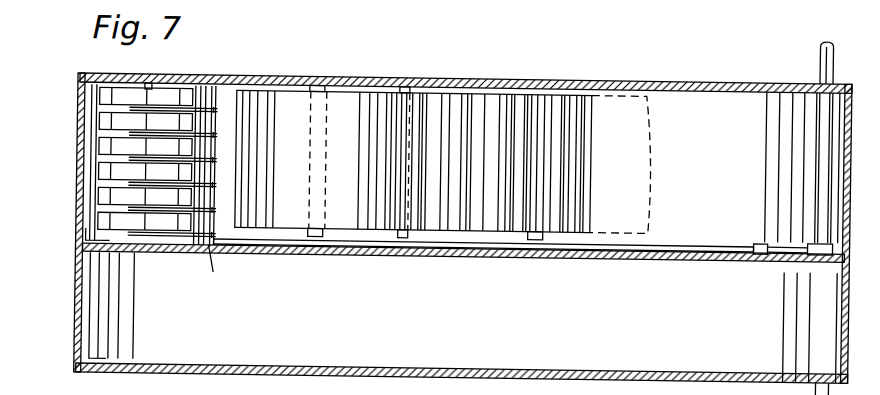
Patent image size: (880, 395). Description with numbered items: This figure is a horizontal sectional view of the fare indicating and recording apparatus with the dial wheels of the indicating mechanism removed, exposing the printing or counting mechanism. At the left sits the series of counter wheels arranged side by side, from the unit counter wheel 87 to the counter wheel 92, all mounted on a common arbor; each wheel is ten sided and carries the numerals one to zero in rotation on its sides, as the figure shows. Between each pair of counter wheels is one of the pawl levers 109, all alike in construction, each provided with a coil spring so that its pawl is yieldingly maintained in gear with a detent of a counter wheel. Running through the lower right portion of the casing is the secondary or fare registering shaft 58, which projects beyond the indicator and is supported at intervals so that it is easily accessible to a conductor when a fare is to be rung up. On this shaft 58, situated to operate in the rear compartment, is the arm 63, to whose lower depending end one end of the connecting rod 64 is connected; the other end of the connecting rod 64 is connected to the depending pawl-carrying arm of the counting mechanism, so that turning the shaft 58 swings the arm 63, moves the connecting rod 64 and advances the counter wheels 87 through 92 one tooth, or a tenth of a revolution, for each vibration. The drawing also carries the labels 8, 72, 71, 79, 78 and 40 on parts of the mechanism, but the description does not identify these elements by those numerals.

The number strip assembly 8 is at (153, 75).
The number strip 72 is at (100, 94).
The counter wheel 92 is at (100, 118).
The number strip 71 is at (100, 143).
The number strip 79 is at (100, 168).
The number strip 78 is at (100, 192).
The unit counter wheel 87 is at (100, 230).
The pawl lever 109 is at (216, 133).
The guide frame 40 is at (208, 203).
The connecting rod 64 is at (652, 235).
The arm 63 is at (800, 233).
The secondary or fare registering shaft 58 is at (820, 44).